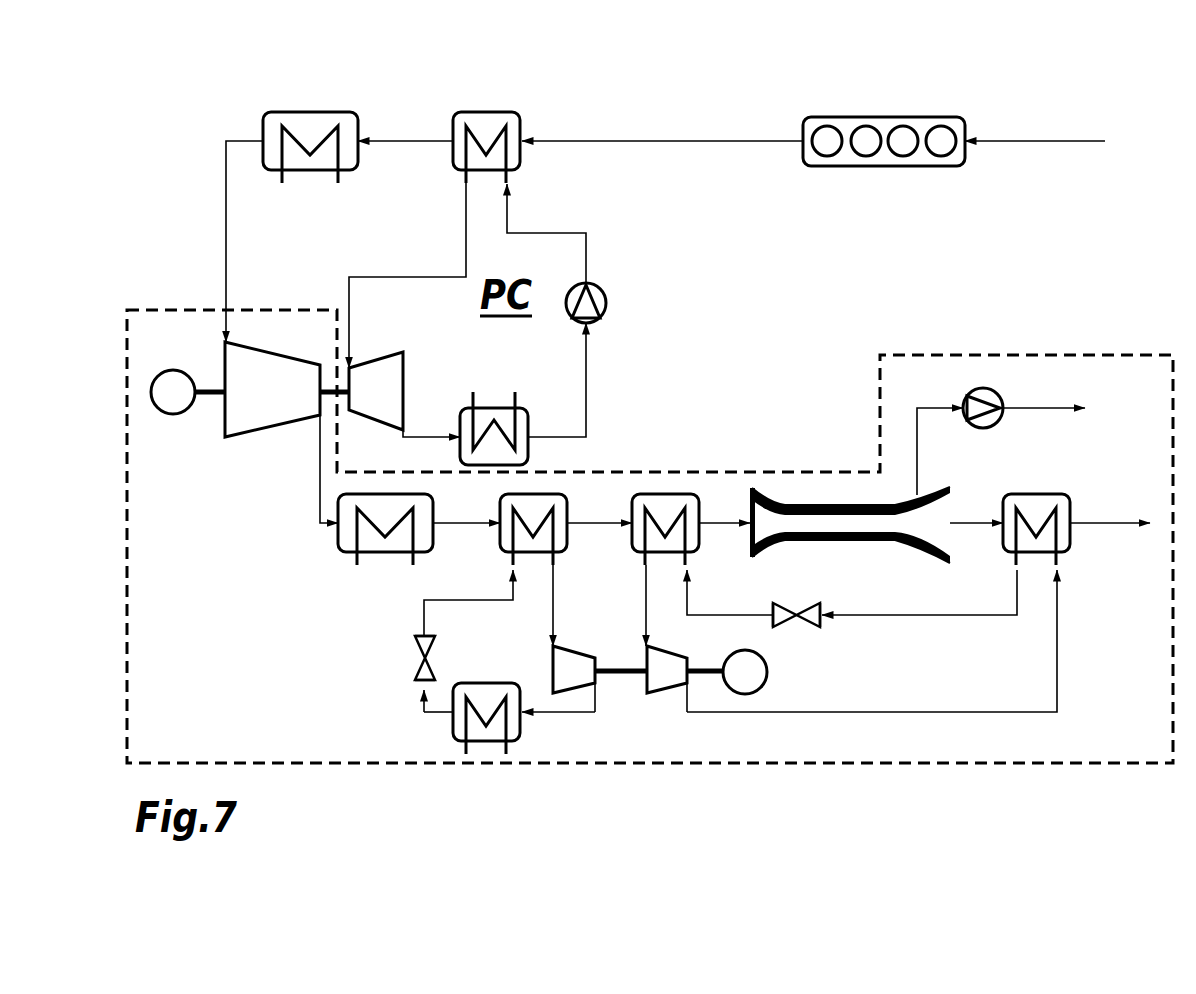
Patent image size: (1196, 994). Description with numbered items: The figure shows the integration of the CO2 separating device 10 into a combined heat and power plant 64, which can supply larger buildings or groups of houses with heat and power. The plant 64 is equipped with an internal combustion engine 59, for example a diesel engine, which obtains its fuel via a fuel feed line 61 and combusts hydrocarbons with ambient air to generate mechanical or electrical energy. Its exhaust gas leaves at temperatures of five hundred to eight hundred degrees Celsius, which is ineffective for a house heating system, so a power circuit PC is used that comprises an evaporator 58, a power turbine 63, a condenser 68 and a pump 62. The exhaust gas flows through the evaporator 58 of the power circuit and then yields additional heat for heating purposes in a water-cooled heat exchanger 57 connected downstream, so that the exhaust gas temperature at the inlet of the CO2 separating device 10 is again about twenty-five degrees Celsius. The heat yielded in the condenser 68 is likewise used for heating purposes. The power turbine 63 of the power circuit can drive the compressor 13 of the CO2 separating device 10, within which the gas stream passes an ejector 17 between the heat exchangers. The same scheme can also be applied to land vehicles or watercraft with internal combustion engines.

The CO2 separating device 10 is at (1045, 765).
The compressor 13 is at (290, 404).
The ejector 17 is at (838, 522).
The water-cooled heat exchanger 57 is at (270, 118).
The evaporator 58 is at (485, 120).
The internal combustion engine 59 is at (847, 122).
The fuel feed line 61 is at (1033, 142).
The pump 62 is at (597, 303).
The power turbine 63 is at (392, 367).
The combined heat and power plant 64 is at (872, 295).
The condenser 68 is at (492, 413).